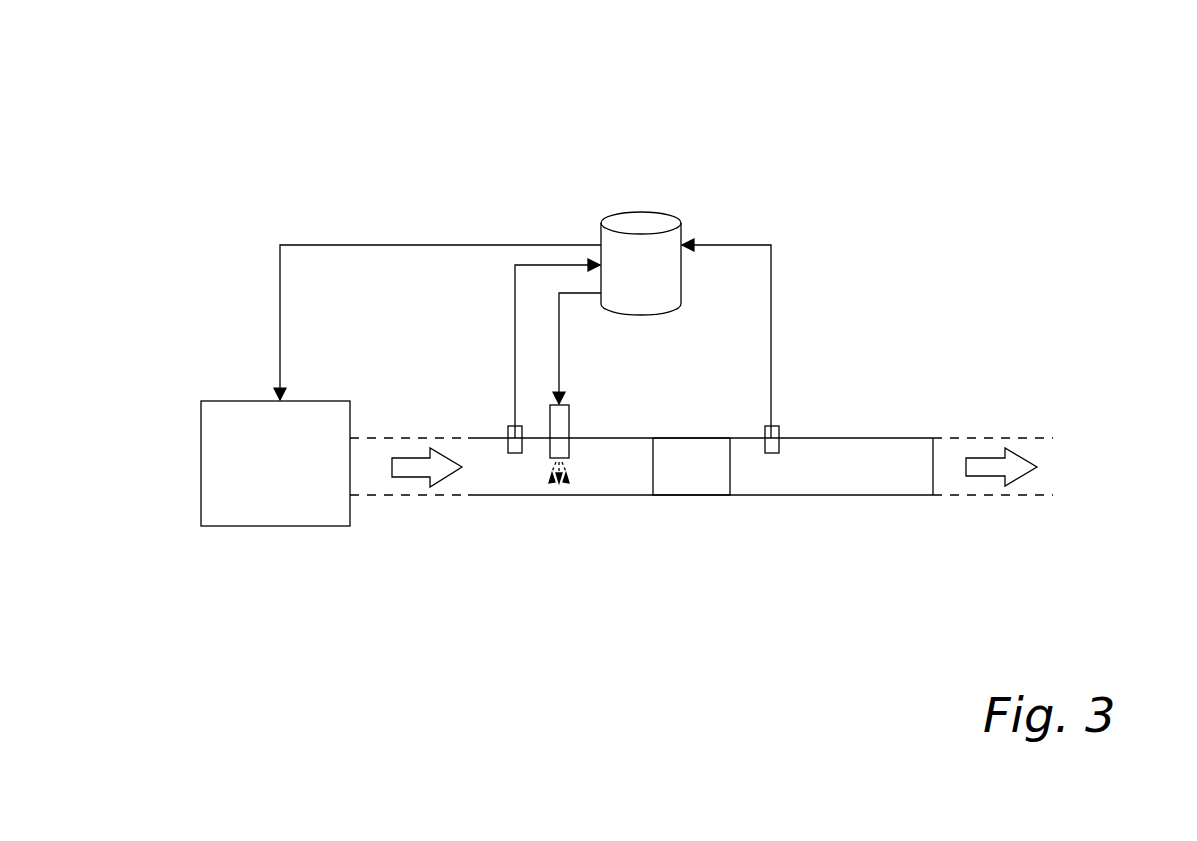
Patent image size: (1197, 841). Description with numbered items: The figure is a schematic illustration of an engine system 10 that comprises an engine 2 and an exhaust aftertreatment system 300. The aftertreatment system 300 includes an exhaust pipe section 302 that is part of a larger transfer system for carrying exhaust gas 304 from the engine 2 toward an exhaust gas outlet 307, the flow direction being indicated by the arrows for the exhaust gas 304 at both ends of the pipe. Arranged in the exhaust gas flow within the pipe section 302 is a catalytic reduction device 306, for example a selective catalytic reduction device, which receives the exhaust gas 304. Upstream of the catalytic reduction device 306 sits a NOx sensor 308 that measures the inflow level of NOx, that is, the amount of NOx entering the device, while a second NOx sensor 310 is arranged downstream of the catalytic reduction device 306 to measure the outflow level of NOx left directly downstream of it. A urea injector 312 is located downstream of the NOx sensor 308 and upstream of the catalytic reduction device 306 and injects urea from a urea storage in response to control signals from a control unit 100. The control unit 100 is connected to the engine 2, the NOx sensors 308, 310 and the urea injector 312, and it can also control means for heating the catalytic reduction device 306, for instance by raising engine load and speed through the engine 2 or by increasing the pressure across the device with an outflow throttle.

The engine system 10 is at (889, 171).
The engine 2 is at (287, 475).
The control unit 100 is at (664, 278).
The exhaust aftertreatment system 300 is at (476, 346).
The exhaust pipe section 302 is at (540, 496).
The exhaust gas 304 is at (407, 477).
The catalytic reduction device 306 is at (717, 478).
The exhaust gas outlet 307 is at (1066, 452).
The NOx sensor 308 is at (507, 428).
The second NOx sensor 310 is at (780, 428).
The urea injector 312 is at (569, 418).